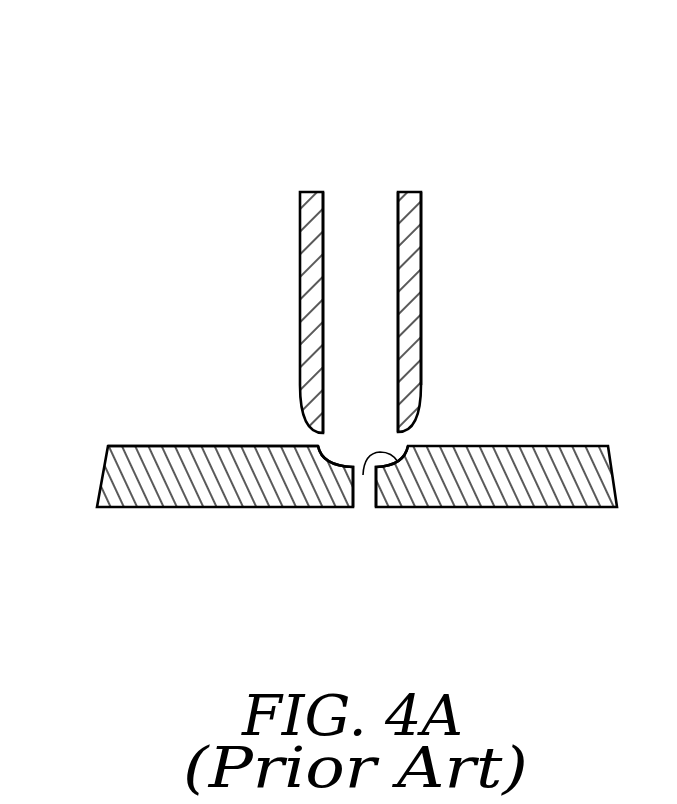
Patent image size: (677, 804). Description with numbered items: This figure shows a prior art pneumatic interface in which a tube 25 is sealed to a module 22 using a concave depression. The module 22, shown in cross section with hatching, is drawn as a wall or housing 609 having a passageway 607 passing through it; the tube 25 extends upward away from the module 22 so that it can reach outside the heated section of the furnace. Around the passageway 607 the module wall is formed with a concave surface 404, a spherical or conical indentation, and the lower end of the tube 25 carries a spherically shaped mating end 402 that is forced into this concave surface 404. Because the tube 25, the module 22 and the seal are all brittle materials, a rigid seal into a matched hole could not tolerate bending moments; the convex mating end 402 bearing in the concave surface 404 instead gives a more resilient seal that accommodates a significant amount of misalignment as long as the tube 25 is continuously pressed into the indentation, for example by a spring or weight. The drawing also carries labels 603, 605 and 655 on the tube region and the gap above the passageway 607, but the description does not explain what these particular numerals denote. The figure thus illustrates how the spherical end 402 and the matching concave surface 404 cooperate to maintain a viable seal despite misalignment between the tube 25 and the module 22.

The module 22 is at (510, 509).
The tube 25 is at (422, 306).
The mating end 402 is at (413, 420).
The concave surface 404 is at (363, 475).
The nozzle gap 603 is at (397, 148).
The nozzle wall 605 is at (434, 218).
The passageway 607 is at (344, 518).
The housing 609 is at (200, 437).
The fluid channel 655 is at (350, 138).